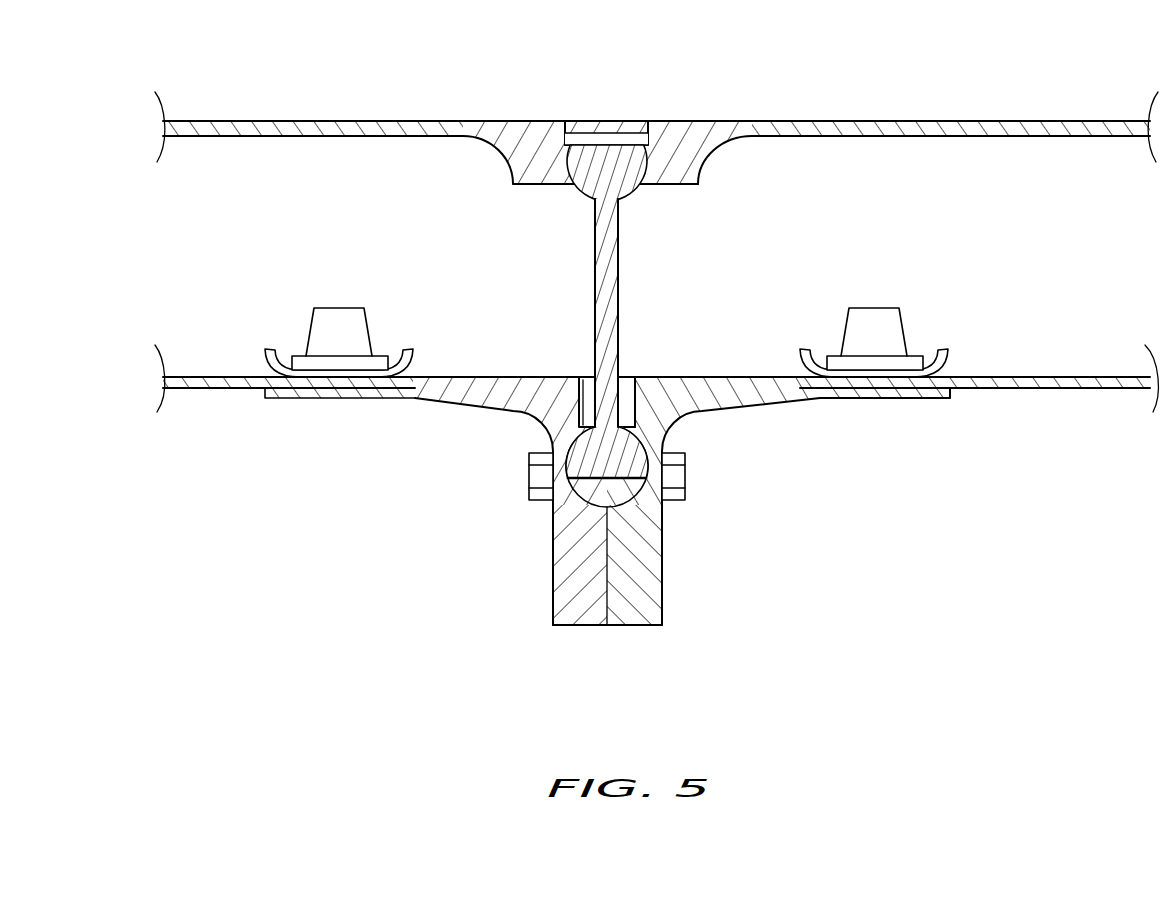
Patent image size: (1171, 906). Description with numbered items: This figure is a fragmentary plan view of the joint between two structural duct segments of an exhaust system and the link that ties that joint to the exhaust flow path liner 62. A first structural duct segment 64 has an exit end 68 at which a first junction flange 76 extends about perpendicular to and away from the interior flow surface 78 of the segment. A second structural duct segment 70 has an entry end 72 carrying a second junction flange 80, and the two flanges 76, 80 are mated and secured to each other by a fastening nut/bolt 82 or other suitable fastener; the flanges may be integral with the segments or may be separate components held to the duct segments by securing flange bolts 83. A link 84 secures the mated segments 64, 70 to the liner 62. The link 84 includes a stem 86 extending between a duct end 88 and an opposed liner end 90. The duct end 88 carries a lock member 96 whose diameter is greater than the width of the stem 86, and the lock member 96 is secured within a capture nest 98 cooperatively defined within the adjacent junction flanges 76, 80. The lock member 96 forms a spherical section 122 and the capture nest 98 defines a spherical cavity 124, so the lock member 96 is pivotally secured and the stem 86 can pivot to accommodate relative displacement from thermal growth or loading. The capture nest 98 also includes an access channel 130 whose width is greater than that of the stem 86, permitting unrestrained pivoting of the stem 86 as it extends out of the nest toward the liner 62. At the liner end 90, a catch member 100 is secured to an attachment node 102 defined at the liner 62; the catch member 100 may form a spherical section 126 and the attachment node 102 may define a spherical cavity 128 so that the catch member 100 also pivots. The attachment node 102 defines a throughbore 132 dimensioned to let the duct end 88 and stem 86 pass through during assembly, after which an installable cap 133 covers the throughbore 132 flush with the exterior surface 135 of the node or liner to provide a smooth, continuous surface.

The exhaust flow path liner 62 is at (198, 120).
The first structural duct segment 64 is at (222, 391).
The second structural duct segment 70 is at (1033, 391).
The exit end 68 is at (523, 413).
The entry end 72 is at (691, 413).
The interior flow surface 78 is at (262, 383).
The securing flange bolts 83 is at (333, 305).
The first junction flange 76 is at (553, 620).
The second junction flange 80 is at (663, 620).
The fastening nut/bolt 82 is at (686, 493).
The link 84 is at (620, 286).
The stem 86 is at (596, 272).
The duct end 88 is at (578, 405).
The access channel 130 is at (590, 380).
The spherical section 122 is at (655, 380).
The lock member 96 is at (582, 518).
The capture nest 98 is at (578, 495).
The spherical cavity 124 is at (650, 512).
The liner end 90 is at (584, 194).
The spherical section 126 is at (640, 195).
The spherical cavity 128 is at (582, 158).
The catch member 100 is at (645, 121).
The throughbore 132 is at (603, 121).
The installable cap 133 is at (636, 121).
The exterior surface 135 is at (498, 121).
The attachment node 102 is at (712, 153).